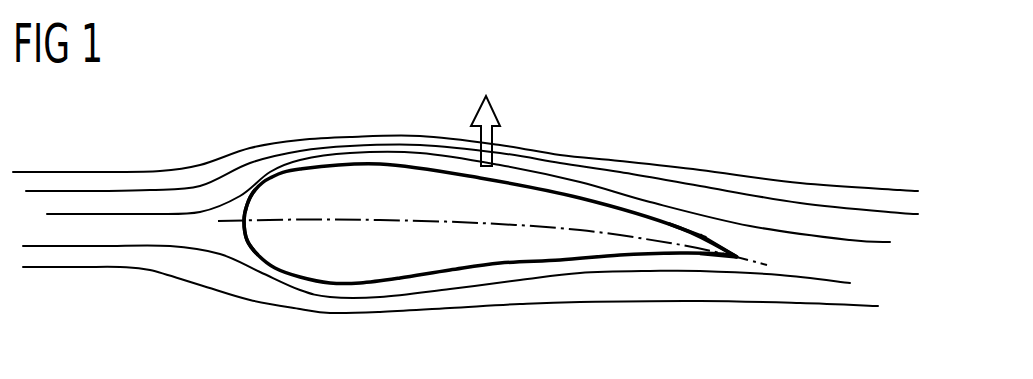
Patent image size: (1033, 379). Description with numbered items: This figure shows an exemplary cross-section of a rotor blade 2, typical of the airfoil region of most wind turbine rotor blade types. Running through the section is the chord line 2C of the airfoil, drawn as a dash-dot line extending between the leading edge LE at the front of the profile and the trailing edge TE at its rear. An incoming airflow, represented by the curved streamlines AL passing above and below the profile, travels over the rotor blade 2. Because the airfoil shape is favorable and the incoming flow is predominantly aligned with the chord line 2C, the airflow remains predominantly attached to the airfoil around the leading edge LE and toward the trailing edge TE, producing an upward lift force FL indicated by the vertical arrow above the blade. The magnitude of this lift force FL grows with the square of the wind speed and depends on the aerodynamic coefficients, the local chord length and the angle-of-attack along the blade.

The rotor blade 2 is at (395, 281).
The chord line 2C is at (520, 226).
The leading edge LE is at (237, 255).
The trailing edge TE is at (743, 273).
The lift force FL is at (493, 135).
The airflow streamlines AL is at (614, 156).